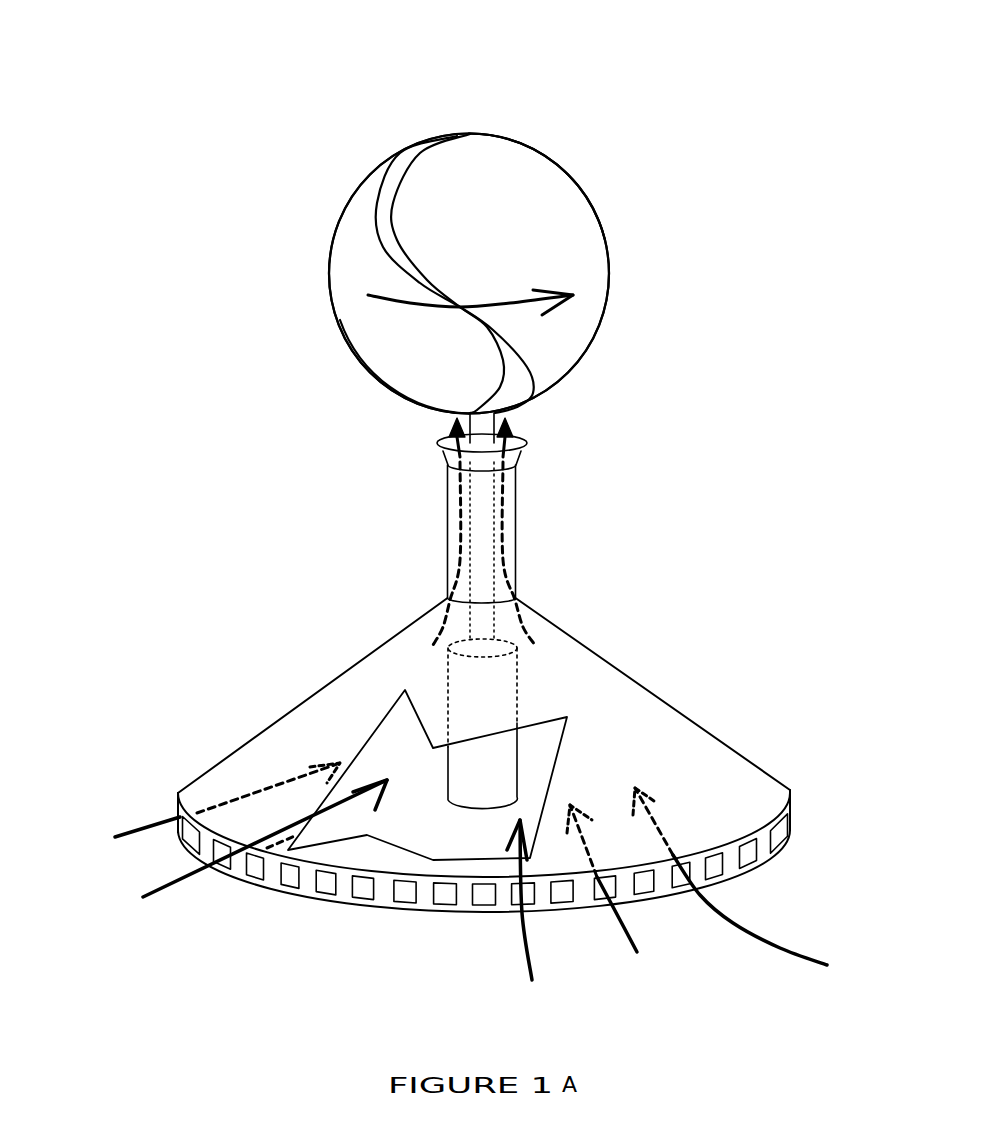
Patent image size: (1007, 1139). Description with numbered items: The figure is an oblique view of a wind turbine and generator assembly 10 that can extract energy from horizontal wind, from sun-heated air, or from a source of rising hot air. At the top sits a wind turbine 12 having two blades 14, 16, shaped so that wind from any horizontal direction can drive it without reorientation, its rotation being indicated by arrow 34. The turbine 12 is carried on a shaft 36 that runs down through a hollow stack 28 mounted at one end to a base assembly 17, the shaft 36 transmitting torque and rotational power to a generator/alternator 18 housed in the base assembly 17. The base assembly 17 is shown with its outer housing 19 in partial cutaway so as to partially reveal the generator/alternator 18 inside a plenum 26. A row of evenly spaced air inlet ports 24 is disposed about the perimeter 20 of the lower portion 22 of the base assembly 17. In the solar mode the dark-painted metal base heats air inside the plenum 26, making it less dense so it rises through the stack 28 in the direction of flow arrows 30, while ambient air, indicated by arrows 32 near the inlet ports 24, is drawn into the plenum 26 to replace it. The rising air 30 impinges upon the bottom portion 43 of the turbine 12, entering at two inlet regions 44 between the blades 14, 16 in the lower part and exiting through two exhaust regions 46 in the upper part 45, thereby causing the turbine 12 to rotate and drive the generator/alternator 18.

The wind turbine and generator assembly 10 is at (402, 87).
The wind turbine 12 is at (347, 238).
The blade 14 is at (520, 225).
The blade 16 is at (387, 332).
The base assembly 17 is at (585, 680).
The generator/alternator 18 is at (468, 787).
The outer housing 19 is at (695, 742).
The perimeter 20 is at (693, 865).
The lower portion 22 is at (620, 898).
The air inlet ports 24 is at (485, 900).
The plenum 26 is at (497, 840).
The stack 28 is at (510, 545).
The flow arrows 30 is at (437, 443).
The air motion arrows 32 is at (187, 882).
The rotation arrow 34 is at (480, 303).
The shaft 36 is at (478, 443).
The bottom portion 43 is at (470, 388).
The inlet regions 44 is at (520, 380).
The upper part 45 is at (487, 165).
The exhaust regions 46 is at (402, 167).